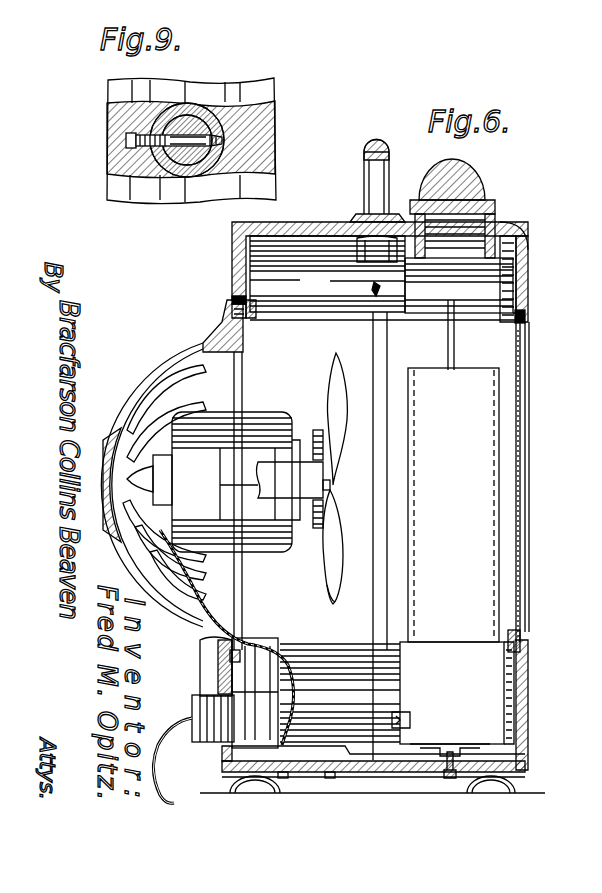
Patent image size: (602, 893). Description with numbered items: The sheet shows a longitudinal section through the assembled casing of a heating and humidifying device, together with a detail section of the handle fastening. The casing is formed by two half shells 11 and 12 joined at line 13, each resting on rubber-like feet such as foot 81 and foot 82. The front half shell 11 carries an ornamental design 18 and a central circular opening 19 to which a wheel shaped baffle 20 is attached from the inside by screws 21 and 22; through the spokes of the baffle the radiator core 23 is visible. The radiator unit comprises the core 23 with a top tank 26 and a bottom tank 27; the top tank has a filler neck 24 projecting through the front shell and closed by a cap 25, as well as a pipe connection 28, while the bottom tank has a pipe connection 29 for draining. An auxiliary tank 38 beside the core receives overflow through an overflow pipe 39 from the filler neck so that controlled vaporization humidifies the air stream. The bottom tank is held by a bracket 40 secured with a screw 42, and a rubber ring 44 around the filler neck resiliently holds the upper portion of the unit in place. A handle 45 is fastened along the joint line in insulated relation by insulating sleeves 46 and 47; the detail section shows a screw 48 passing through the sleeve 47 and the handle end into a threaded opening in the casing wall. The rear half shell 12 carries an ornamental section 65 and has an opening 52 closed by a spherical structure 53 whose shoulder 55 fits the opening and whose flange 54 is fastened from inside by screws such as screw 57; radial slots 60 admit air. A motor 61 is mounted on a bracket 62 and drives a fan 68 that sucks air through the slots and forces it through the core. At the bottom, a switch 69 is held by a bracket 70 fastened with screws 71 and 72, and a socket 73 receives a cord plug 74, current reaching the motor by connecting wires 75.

In FIG. 9, the half shell 11 is at (160, 92).
In FIG. 6, the half shell 11 is at (530, 259).
In FIG. 9, the half shell 12 is at (218, 88).
In FIG. 6, the half shell 12 is at (232, 262).
In FIG. 6, the line 13 is at (373, 516).
In FIG. 6, the ornamental design 18 is at (531, 305).
In FIG. 6, the circular opening 19 is at (530, 320).
In FIG. 6, the baffle 20 is at (522, 479).
In FIG. 6, the screw 21 is at (499, 334).
In FIG. 6, the screw 22 is at (527, 643).
In FIG. 6, the radiator core 23 is at (508, 404).
In FIG. 6, the filler neck 24 is at (495, 224).
In FIG. 6, the cap 25 is at (485, 174).
In FIG. 6, the top tank 26 is at (500, 291).
In FIG. 6, the bottom tank 27 is at (528, 704).
In FIG. 6, the pipe connection 28 is at (375, 303).
In FIG. 6, the pipe connection 29 is at (410, 721).
In FIG. 6, the auxiliary tank 38 is at (480, 540).
In FIG. 6, the overflow pipe 39 is at (448, 340).
In FIG. 6, the bracket 40 is at (478, 746).
In FIG. 6, the screw 42 is at (450, 752).
In FIG. 6, the rubber ring 44 is at (529, 241).
In FIG. 9, the handle 45 is at (175, 182).
In FIG. 6, the handle 45 is at (368, 170).
In FIG. 6, the insulating sleeve 46 is at (358, 244).
In FIG. 9, the insulating sleeve 47 is at (108, 113).
In FIG. 9, the screw 48 is at (124, 141).
In FIG. 6, the opening 52 is at (232, 311).
In FIG. 6, the spherical protective and ornamental structure 53 is at (114, 440).
In FIG. 6, the flange 54 is at (246, 358).
In FIG. 6, the shoulder 55 is at (212, 330).
In FIG. 6, the screw 57 is at (246, 306).
In FIG. 6, the radial slot 60 is at (176, 396).
In FIG. 6, the motor 61 is at (276, 414).
In FIG. 6, the bracket 62 is at (330, 468).
In FIG. 6, the ornamental section 65 is at (232, 300).
In FIG. 6, the fan 68 is at (338, 400).
In FIG. 6, the switch 69 is at (214, 650).
In FIG. 6, the bracket 70 is at (272, 644).
In FIG. 6, the screw 71 is at (285, 779).
In FIG. 6, the screw 72 is at (330, 779).
In FIG. 6, the socket 73 is at (218, 680).
In FIG. 6, the plug 74 is at (204, 716).
In FIG. 6, the connecting wires 75 is at (246, 640).
In FIG. 6, the foot 81 is at (516, 789).
In FIG. 6, the foot 82 is at (242, 788).